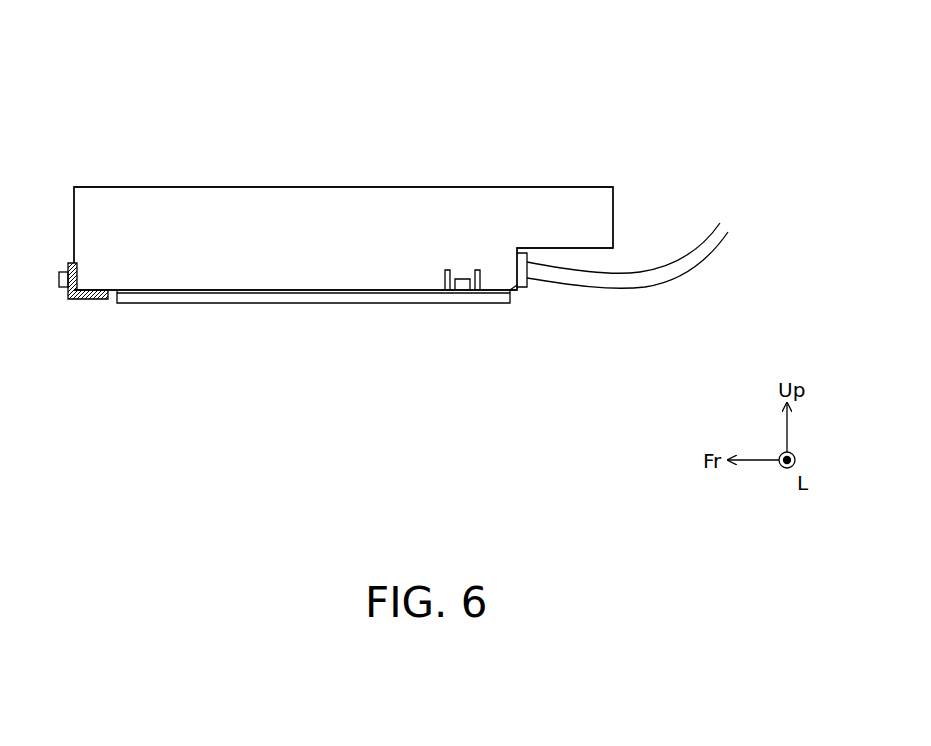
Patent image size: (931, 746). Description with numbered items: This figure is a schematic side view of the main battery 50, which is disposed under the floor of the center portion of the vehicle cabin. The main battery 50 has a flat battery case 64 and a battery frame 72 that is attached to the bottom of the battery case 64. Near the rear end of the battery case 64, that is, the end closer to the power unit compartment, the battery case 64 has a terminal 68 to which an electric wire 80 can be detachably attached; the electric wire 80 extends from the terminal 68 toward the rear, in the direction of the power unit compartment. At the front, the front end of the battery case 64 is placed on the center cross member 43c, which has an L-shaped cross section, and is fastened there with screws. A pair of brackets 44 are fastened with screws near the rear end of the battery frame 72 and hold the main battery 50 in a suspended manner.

The main battery 50 is at (205, 112).
The battery case 64 is at (267, 187).
The center cross member 43c is at (85, 300).
The battery frame 72 is at (367, 303).
The bracket 44 is at (485, 279).
The terminal 68 is at (522, 291).
The electric wire 80 is at (650, 281).